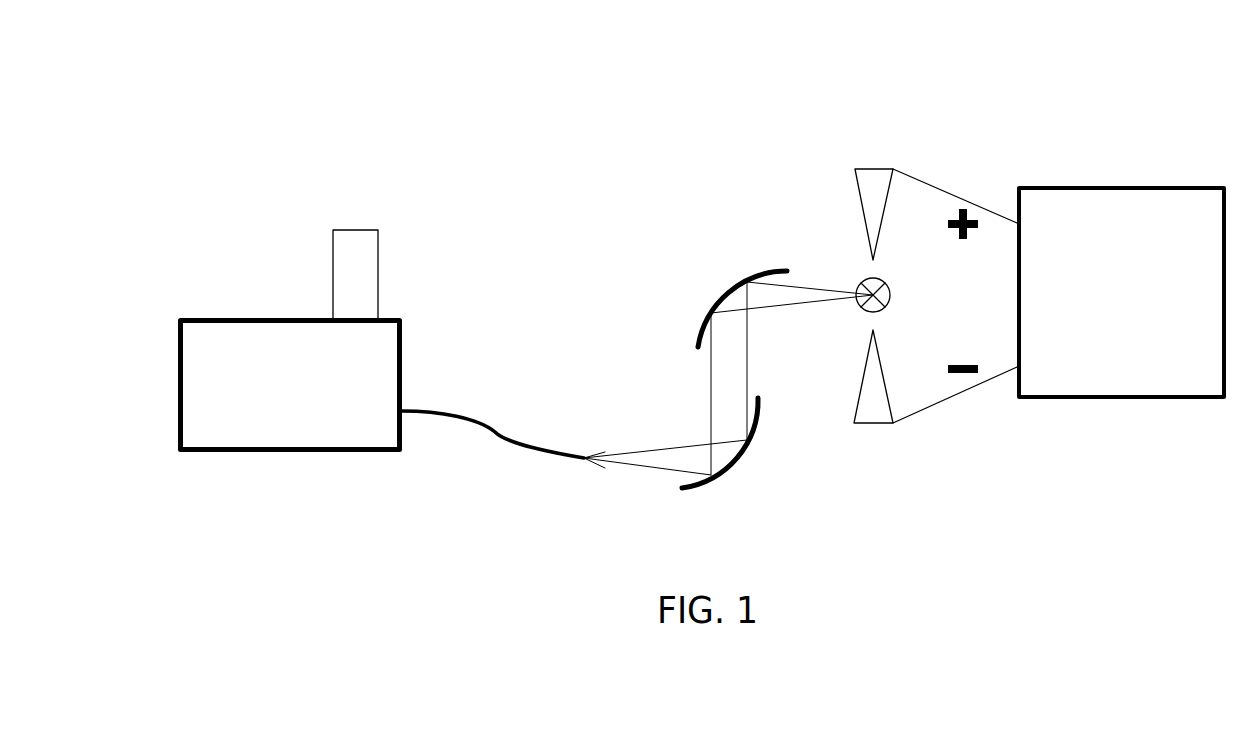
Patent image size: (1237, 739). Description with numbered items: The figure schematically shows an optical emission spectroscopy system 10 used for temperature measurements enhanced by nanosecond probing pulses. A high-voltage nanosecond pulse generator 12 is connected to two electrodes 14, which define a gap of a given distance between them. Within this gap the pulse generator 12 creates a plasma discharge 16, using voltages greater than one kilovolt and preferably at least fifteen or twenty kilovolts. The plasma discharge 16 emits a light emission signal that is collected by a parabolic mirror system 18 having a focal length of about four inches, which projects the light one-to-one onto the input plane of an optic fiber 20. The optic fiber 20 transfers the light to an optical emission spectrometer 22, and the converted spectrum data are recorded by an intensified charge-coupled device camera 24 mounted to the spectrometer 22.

The optical emission spectroscopy system 10 is at (450, 87).
The high-voltage nanosecond pulse generator 12 is at (1086, 292).
The electrodes 14 is at (871, 192).
The plasma discharge 16 is at (877, 305).
The parabolic mirror system 18 is at (712, 240).
The optic fiber 20 is at (516, 447).
The optical emission spectrometer 22 is at (290, 385).
The intensified charge-coupled device (ICCD) camera 24 is at (362, 268).